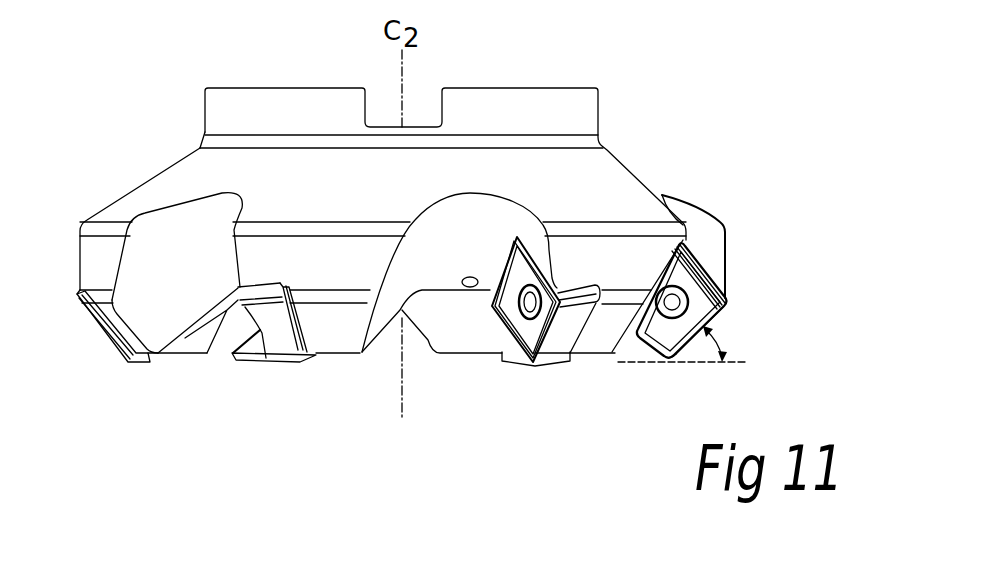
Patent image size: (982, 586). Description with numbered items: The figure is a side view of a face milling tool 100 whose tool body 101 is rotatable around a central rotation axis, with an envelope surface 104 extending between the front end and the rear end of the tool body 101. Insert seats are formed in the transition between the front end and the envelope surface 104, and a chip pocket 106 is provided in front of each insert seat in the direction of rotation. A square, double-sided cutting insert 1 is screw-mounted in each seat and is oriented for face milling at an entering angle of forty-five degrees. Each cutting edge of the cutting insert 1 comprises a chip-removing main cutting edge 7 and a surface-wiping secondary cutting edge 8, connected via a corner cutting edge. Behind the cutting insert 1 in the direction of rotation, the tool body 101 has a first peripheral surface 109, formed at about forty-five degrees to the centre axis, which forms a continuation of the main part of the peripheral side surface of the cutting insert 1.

The milling tool 100 is at (658, 80).
The tool body 101 is at (642, 184).
The envelope surface 104 is at (347, 190).
The chip pocket 106 is at (432, 270).
The first peripheral surface 109 is at (603, 328).
The cutting insert 1 is at (723, 302).
The main cutting edge 7 is at (695, 342).
The secondary cutting edge 8 is at (672, 366).